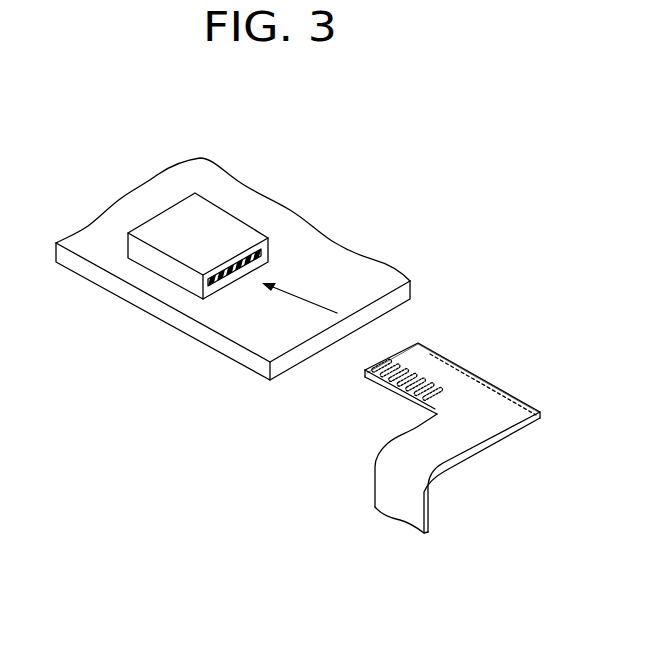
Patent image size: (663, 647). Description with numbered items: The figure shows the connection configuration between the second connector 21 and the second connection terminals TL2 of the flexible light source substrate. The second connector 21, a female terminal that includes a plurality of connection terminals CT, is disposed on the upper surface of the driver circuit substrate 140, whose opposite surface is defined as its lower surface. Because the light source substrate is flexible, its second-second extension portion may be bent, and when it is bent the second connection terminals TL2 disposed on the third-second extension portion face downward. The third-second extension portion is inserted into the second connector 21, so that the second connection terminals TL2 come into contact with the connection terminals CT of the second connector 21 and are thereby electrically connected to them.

The driver circuit substrate 140 is at (357, 263).
The second connector 21 is at (233, 230).
The connection terminals CT is at (223, 262).
The second connection terminals TL2 is at (402, 367).